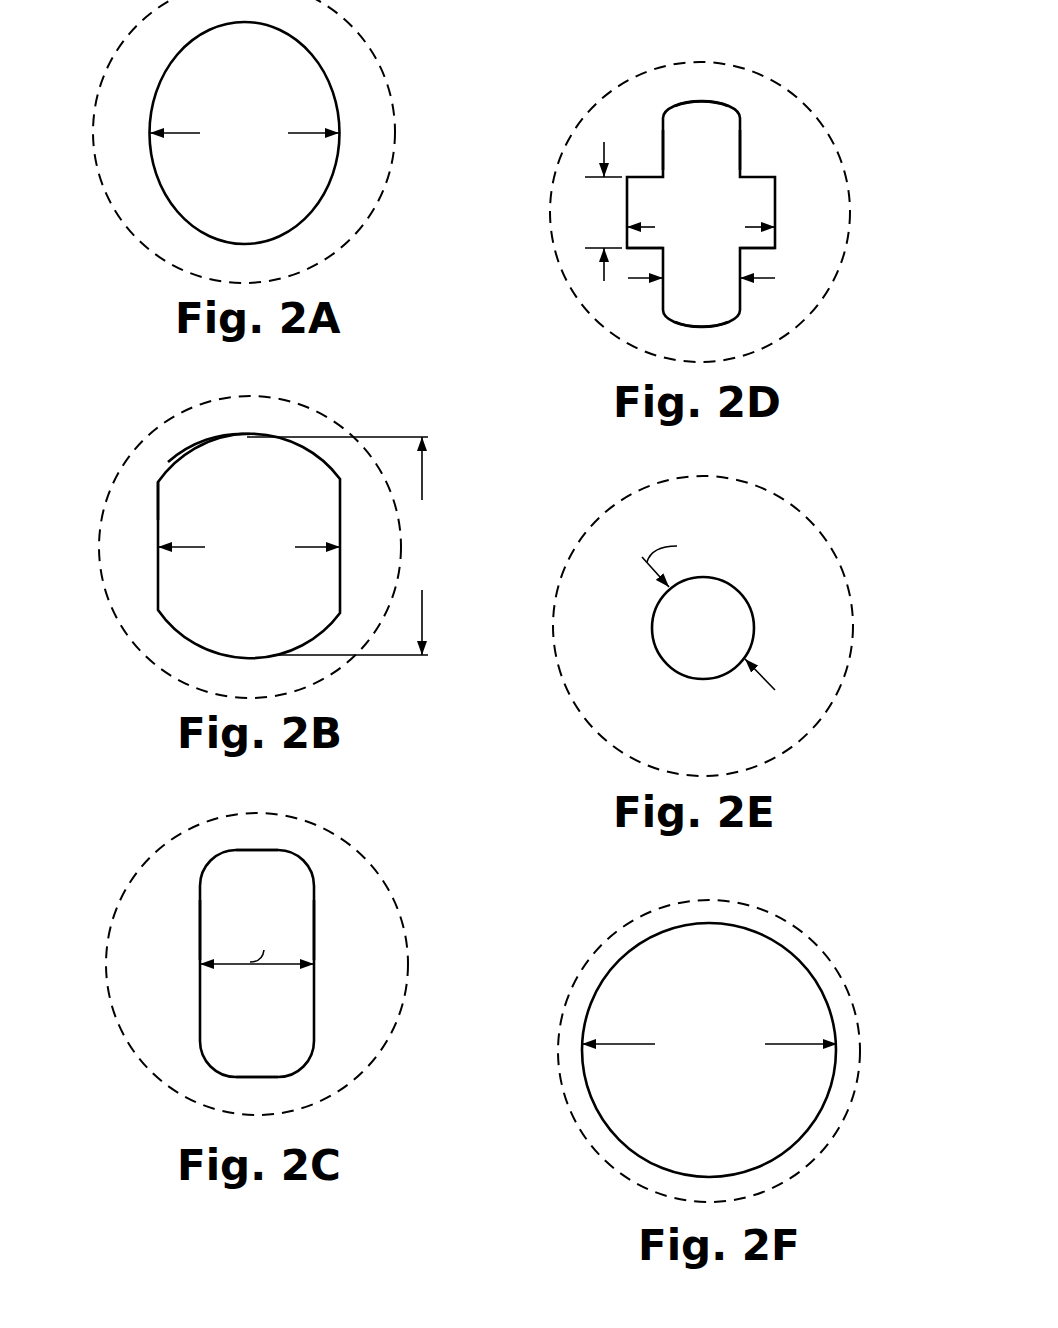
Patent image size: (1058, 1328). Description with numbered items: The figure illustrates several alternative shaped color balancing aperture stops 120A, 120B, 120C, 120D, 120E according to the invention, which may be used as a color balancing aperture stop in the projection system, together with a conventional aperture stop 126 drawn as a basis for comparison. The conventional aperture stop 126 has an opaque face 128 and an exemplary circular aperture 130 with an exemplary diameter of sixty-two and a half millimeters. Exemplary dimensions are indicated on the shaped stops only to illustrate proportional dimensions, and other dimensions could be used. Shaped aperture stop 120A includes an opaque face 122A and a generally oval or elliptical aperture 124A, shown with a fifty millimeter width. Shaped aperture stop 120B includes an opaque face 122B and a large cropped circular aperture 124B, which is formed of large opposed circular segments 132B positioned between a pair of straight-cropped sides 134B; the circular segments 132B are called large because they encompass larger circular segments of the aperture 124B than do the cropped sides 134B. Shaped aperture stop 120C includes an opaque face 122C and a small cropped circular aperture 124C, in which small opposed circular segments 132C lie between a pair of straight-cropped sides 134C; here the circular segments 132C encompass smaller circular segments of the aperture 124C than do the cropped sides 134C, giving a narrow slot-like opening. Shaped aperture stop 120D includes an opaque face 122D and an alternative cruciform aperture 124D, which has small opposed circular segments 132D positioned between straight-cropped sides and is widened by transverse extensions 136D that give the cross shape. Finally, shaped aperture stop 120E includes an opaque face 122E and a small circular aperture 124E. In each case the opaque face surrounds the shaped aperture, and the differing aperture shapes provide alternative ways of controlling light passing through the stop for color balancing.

In FIG. 2A, the shaped aperture stop 120A is at (127, 255).
In FIG. 2A, the opaque face 122A is at (343, 42).
In FIG. 2A, the oval or elliptical aperture 124A is at (212, 190).
In FIG. 2B, the shaped aperture stop 120B is at (133, 662).
In FIG. 2B, the opaque face 122B is at (276, 410).
In FIG. 2B, the large cropped circular aperture 124B is at (218, 599).
In FIG. 2B, the large opposed circular segments 132B is at (177, 462).
In FIG. 2B, the straight-cropped sides 134B is at (156, 492).
In FIG. 2C, the shaped aperture stop 120C is at (143, 1080).
In FIG. 2C, the opaque face 122C is at (281, 828).
In FIG. 2C, the small cropped circular aperture 124C is at (225, 1016).
In FIG. 2C, the small opposed circular segments 132C is at (297, 858).
In FIG. 2C, the straight-cropped sides 134C is at (197, 930).
In FIG. 2D, the straight-cropped sides 134C is at (660, 148).
In FIG. 2D, the shaped aperture stop 120D is at (578, 326).
In FIG. 2D, the opaque face 122D is at (736, 80).
In FIG. 2D, the cruciform aperture 124D is at (669, 209).
In FIG. 2D, the small opposed circular segments 132D is at (730, 106).
In FIG. 2D, the transverse extensions 136D is at (768, 250).
In FIG. 2E, the shaped aperture stop 120E is at (586, 736).
In FIG. 2E, the opaque face 122E is at (740, 497).
In FIG. 2E, the small circular aperture 124E is at (671, 640).
In FIG. 2F, the conventional aperture stop 126 is at (586, 1176).
In FIG. 2F, the opaque face 128 is at (780, 926).
In FIG. 2F, the circular aperture 130 is at (686, 1098).